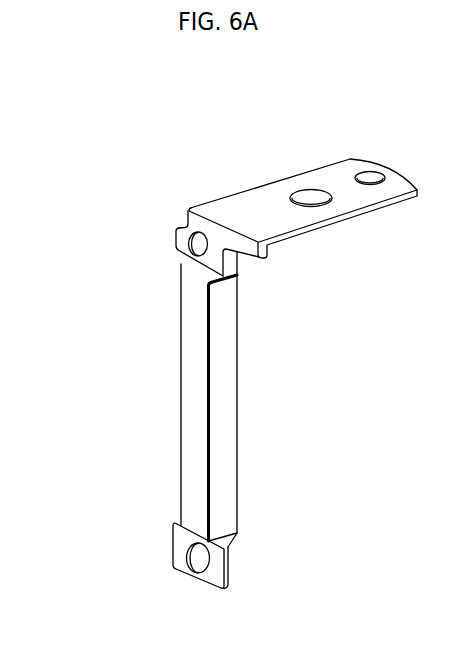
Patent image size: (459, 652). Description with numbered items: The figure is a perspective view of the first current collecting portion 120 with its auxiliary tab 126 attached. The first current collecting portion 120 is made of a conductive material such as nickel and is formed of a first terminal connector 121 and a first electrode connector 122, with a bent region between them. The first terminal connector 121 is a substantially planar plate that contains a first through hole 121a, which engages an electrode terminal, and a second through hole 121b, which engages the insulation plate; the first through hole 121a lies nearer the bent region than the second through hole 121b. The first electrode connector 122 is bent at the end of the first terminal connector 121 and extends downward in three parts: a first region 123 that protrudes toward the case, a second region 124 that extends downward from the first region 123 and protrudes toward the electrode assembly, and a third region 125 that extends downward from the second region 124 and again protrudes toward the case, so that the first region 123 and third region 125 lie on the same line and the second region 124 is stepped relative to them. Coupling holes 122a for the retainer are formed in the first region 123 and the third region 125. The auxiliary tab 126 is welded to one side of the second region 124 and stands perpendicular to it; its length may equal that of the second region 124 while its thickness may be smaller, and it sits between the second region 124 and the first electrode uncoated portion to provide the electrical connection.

The first current collecting portion 120 is at (45, 106).
The first terminal connector 121 is at (236, 200).
The first through hole 121a is at (313, 190).
The second through hole 121b is at (364, 172).
The first electrode connector 122 is at (92, 305).
The coupling holes 122a is at (203, 233).
The first region 123 is at (176, 249).
The second region 124 is at (191, 385).
The third region 125 is at (181, 534).
The auxiliary tab 126 is at (234, 421).